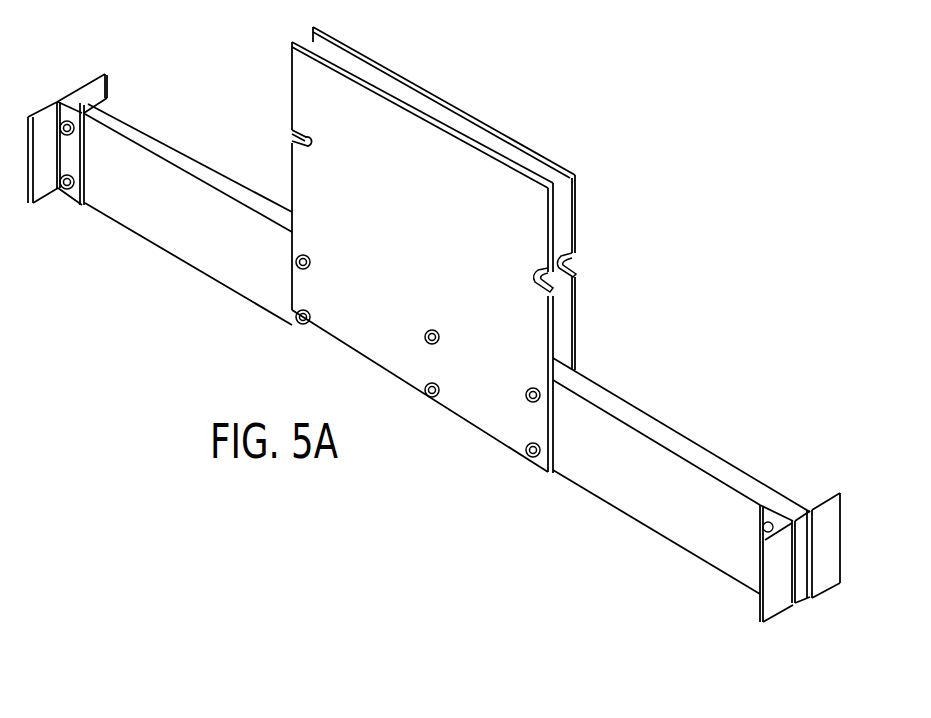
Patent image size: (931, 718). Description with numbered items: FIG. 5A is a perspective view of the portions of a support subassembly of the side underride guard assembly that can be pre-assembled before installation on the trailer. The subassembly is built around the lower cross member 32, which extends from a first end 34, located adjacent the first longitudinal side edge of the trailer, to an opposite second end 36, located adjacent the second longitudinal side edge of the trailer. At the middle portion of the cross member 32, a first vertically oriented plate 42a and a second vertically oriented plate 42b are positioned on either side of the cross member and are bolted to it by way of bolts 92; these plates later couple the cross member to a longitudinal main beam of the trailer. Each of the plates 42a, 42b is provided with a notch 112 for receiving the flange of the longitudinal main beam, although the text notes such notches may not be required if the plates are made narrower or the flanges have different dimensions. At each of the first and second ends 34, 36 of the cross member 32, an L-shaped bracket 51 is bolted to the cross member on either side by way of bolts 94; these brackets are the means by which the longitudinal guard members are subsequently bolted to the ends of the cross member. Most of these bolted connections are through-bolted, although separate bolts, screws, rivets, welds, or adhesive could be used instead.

The lower cross member 32 is at (206, 202).
The first end 34 is at (66, 199).
The second end 36 is at (758, 596).
The vertically oriented plate 42a is at (443, 252).
The vertically oriented plate 42b is at (507, 136).
The L-shaped bracket 51 is at (45, 116).
The bolt 92 is at (310, 268).
The bolt 94 is at (72, 177).
The notch 112 is at (557, 288).